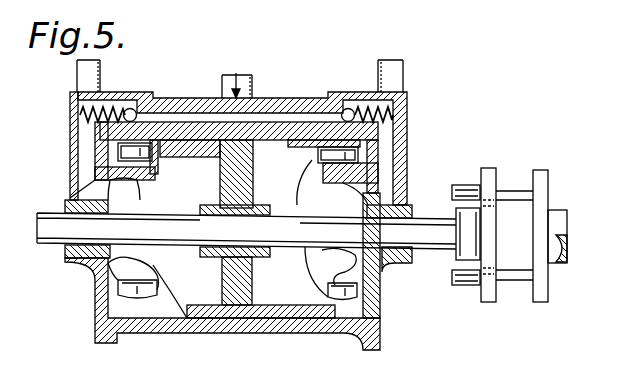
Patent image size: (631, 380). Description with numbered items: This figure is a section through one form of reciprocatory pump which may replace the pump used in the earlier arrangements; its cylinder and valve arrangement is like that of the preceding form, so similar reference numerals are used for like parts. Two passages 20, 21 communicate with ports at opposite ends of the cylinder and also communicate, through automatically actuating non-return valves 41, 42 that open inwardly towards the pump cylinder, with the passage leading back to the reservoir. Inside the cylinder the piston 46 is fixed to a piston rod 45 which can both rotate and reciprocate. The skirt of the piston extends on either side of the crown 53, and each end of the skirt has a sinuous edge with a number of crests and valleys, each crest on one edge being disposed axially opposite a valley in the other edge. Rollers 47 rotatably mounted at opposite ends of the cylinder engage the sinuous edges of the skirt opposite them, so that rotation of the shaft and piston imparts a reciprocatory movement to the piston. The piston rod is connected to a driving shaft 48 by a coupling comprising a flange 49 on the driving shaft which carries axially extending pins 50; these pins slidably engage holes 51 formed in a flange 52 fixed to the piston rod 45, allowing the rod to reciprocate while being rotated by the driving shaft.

The passage 20 is at (403, 78).
The passage 21 is at (90, 74).
The non-return valve 41 is at (346, 107).
The non-return valve 42 is at (132, 104).
The piston rod 45 is at (63, 225).
The piston 46 is at (243, 280).
The rollers 47 is at (122, 153).
The driving shaft 48 is at (566, 184).
The flange 49 is at (545, 177).
The pins 50 is at (468, 188).
The holes 51 is at (491, 178).
The flange 52 is at (486, 258).
The crown 53 is at (263, 323).